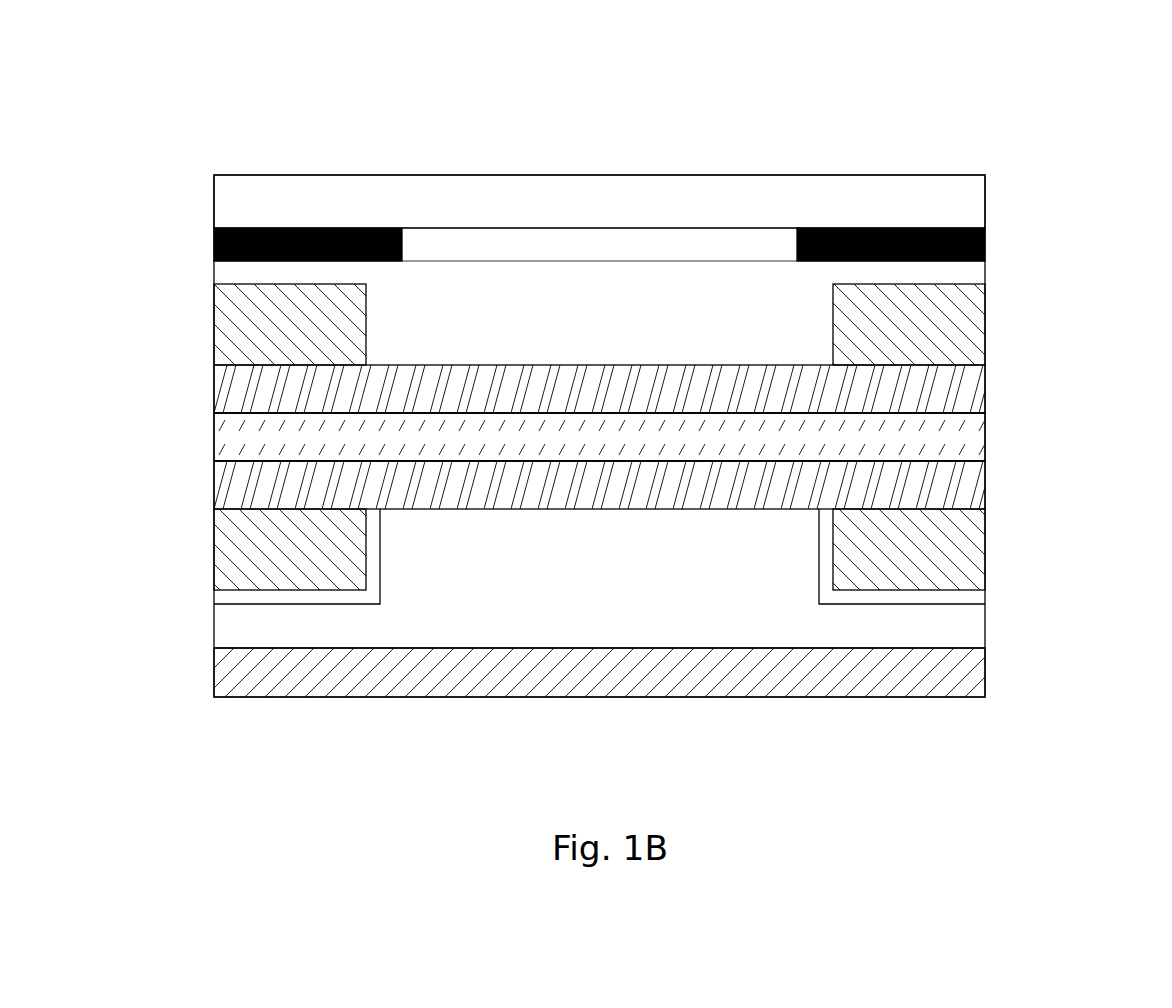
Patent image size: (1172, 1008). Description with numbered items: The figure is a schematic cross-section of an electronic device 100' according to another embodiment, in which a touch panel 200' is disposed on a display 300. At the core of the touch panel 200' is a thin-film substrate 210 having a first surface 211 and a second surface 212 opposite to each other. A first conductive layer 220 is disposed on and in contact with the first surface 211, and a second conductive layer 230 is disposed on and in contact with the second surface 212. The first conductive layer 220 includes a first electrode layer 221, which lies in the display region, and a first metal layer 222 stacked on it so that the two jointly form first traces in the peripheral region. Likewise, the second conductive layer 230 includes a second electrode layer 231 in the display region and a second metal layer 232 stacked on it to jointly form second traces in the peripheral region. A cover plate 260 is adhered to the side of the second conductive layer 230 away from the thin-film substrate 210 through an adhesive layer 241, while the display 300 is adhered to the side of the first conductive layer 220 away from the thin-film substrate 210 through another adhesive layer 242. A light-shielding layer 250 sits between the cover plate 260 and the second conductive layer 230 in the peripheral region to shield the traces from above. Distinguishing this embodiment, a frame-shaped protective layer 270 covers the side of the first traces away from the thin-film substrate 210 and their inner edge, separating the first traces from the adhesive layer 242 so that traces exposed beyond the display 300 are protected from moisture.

The electronic device 100' is at (590, 374).
The touch panel 200' is at (590, 436).
The cover plate 260 is at (214, 206).
The light-shielding layer 250 is at (214, 246).
The adhesive layer 241 is at (214, 272).
The second conductive layer 230 is at (108, 305).
The second metal layer 232 is at (214, 325).
The second electrode layer 231 is at (214, 392).
The thin-film substrate 210 is at (214, 440).
The first surface 211 is at (940, 413).
The second surface 212 is at (943, 462).
The first conductive layer 220 is at (108, 472).
The first electrode layer 221 is at (214, 492).
The first metal layer 222 is at (214, 557).
The protective layer 270 is at (214, 597).
The adhesive layer 242 is at (214, 629).
The display 300 is at (214, 674).